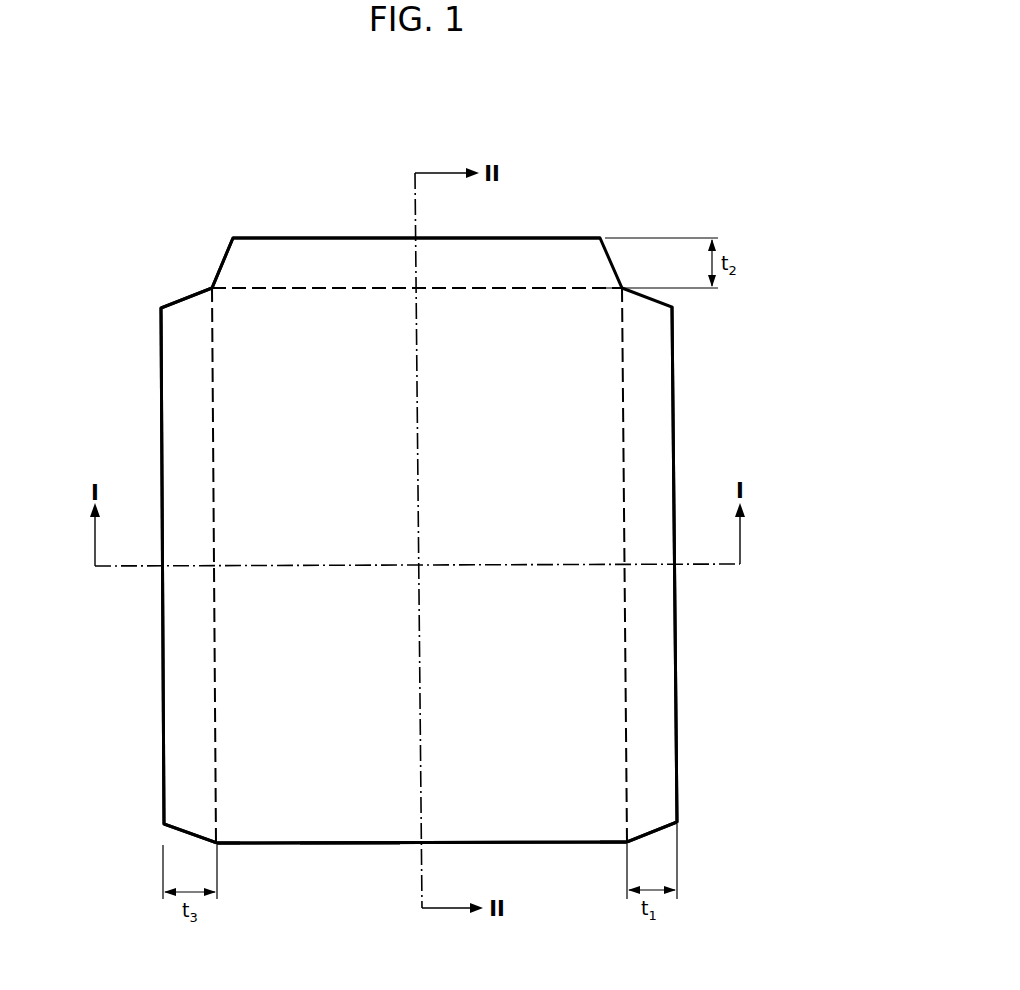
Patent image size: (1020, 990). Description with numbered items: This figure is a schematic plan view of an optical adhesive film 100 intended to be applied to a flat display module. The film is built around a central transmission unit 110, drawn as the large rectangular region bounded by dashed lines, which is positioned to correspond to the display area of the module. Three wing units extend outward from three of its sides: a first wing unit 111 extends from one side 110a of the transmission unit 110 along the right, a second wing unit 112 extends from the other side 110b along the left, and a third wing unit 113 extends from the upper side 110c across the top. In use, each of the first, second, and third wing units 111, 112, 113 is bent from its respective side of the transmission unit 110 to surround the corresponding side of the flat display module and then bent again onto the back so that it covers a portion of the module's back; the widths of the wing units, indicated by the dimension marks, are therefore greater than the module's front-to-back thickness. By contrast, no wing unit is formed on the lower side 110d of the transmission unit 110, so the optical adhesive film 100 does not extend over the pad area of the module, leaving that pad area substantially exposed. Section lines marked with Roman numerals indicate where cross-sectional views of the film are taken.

The optical adhesive film 100 is at (650, 158).
The transmission unit 110 is at (540, 820).
The one side of the transmission unit 110a is at (627, 810).
The other side of the transmission unit 110b is at (218, 813).
The upper side of the transmission unit 110c is at (262, 288).
The lower side of the transmission unit 110d is at (353, 843).
The first wing unit 111 is at (667, 728).
The second wing unit 112 is at (172, 735).
The third wing unit 113 is at (562, 245).